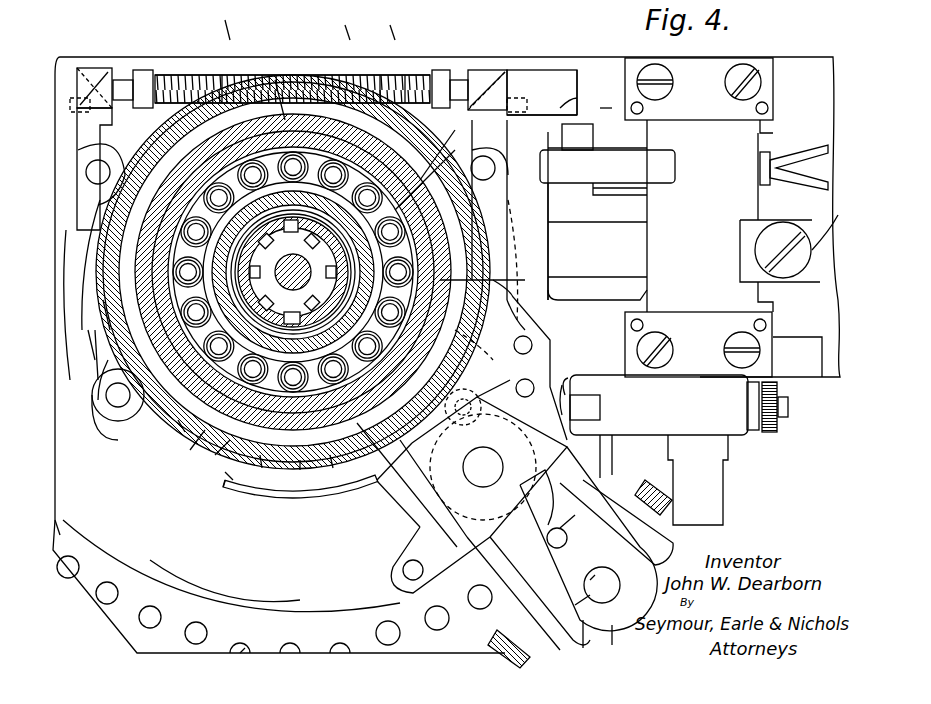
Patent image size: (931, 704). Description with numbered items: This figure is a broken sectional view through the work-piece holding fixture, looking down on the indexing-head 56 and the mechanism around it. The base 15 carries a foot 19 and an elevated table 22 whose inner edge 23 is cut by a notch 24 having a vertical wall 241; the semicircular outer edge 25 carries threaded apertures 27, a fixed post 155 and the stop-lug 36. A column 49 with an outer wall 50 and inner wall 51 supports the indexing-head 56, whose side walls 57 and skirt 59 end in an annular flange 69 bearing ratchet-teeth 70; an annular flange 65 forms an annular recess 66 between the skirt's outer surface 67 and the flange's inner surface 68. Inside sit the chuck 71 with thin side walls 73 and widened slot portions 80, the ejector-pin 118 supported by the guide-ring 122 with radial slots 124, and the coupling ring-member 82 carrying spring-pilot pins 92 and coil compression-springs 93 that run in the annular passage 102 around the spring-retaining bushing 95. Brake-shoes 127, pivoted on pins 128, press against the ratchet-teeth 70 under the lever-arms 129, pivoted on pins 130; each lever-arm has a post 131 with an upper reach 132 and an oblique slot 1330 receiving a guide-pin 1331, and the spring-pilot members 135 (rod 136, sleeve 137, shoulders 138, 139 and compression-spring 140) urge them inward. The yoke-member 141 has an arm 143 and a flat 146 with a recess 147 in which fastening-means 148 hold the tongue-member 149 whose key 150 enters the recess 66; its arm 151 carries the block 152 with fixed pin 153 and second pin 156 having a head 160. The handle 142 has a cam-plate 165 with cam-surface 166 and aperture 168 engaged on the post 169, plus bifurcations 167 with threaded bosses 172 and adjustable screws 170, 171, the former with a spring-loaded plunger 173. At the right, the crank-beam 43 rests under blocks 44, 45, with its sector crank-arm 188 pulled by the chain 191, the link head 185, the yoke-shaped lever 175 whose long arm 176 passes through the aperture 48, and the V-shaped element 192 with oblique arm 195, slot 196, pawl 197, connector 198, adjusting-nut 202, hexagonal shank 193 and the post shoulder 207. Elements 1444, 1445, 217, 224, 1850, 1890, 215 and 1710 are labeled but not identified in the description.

The foot 19 is at (828, 60).
The outer edge of the table 25 is at (93, 625).
The table portion 22 is at (225, 567).
The internally-threaded apertures 27 is at (238, 617).
The ejector-pin 118 is at (278, 272).
The chuck-coupling ring-member 82 is at (200, 215).
The cylindrical side walls of the chuck 73 is at (285, 235).
The radial slots 124 is at (306, 241).
The widened portion of the slots 80 is at (282, 308).
The guide-ring 122 is at (293, 272).
The pin 92 is at (233, 185).
The coil compression-spring 93 is at (200, 165).
The chuck 71 is at (310, 76).
The spring-retaining bushing 95 is at (290, 78).
The column 49 is at (139, 388).
The wall of the column 50 is at (178, 425).
The cylindrical side walls of the indexing-head 57 is at (218, 448).
The ratchet-teeth 70 is at (232, 460).
The annular recess 66 is at (267, 469).
The outer cylindrical surface of the skirt 67 is at (299, 471).
The inner cylindrical surface of the flange 68 is at (331, 469).
The yoke-member 141 is at (350, 495).
The arm of the yoke-member 143 is at (285, 498).
The annular flange 65 is at (235, 486).
The indexing-head 56 is at (71, 305).
The inner wall of the column 51 is at (175, 296).
The skirt of the indexing-head 59 is at (160, 312).
The brake-shoes 127 is at (100, 340).
The annular flange 69 is at (110, 356).
The pin 128 is at (118, 408).
The pin 130 is at (98, 185).
The spring-loaded lever-arm 129 is at (78, 68).
The bracket edge 1444 is at (500, 230).
The bracket edge 1445 is at (510, 260).
The annular passage 102 is at (431, 164).
The spring-pilot member 135 is at (195, 72).
The sleeve 137 is at (225, 72).
The annular shoulder 139 is at (175, 40).
The oblique slot 1330 is at (143, 68).
The vertical post 131 is at (92, 66).
The upper reach 132 is at (100, 80).
The guide-pin 1331 is at (75, 60).
The annular shoulder 138 is at (441, 68).
The coil compression-spring 140 is at (382, 72).
The rod 136 is at (407, 72).
The inner edge of the table 23 is at (540, 68).
The base 15 is at (575, 60).
The notch 24 is at (562, 83).
The vertical wall of the recess 241 is at (598, 100).
The yoke-shaped member 175 is at (226, 20).
The member 217 is at (342, 21).
The member 224 is at (383, 21).
The block 44 is at (762, 82).
The chain 191 is at (818, 150).
The screw 1850 is at (795, 232).
The hook-shaped head 185 is at (822, 258).
The crank-beam 43 is at (647, 246).
The elongated aperture 48 is at (628, 298).
The bar 1890 is at (607, 225).
The long arm 176 is at (592, 212).
The sector-shaped crank-arm 188 is at (603, 192).
The flat section 146 is at (515, 316).
The block 45 is at (765, 338).
The shoulder 207 is at (812, 372).
The obliquely-extending arm 195 is at (600, 435).
The vertical slot 196 is at (600, 406).
The V-shaped element 192 is at (607, 380).
The pawl 197 is at (562, 385).
The connector 198 is at (770, 410).
The adjusting-nut 202 is at (770, 432).
The knob stem 215 is at (790, 415).
The shank-portion 193 is at (728, 460).
The bifurcations 167 is at (470, 580).
The adjustable screw 171 is at (650, 482).
The handle 142 is at (423, 508).
The fastening-means 148 is at (405, 490).
The post 169 is at (503, 462).
The aperture 168 is at (465, 470).
The cam-surface 166 is at (460, 416).
The cam-plate 165 is at (505, 438).
The upstanding curvilinear key 150 is at (470, 342).
The shallow rectangular recess 147 is at (529, 353).
The tongue-shaped member 149 is at (532, 396).
The second pin 156 is at (625, 590).
The head 160 is at (615, 560).
The arm of the yoke 151 is at (582, 567).
The spring-loaded plunger 173 is at (571, 588).
The innermost pin 153 is at (547, 540).
The link 1710 is at (583, 530).
The fixed post 155 is at (560, 495).
The threaded boss 172 is at (520, 565).
The adjustable screw 170 is at (495, 632).
The stop-lug 36 is at (584, 641).
The block 152 is at (618, 644).